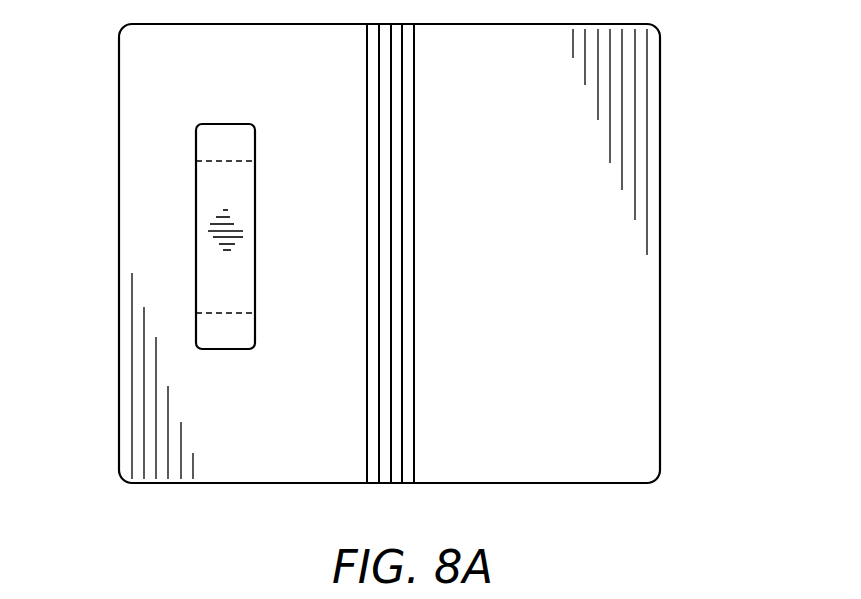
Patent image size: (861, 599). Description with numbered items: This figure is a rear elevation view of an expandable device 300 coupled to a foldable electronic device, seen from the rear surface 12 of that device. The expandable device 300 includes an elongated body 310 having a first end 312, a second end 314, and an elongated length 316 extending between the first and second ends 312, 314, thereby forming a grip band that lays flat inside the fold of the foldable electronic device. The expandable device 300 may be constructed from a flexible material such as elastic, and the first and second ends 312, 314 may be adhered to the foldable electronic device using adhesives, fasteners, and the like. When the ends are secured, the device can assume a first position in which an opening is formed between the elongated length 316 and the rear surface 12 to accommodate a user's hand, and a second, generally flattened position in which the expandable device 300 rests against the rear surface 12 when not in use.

The expandable device 300 is at (675, 379).
The rear surface 12 is at (260, 444).
The elongated body 310 is at (195, 218).
The first end 312 is at (218, 146).
The second end 314 is at (218, 334).
The elongated length 316 is at (218, 282).